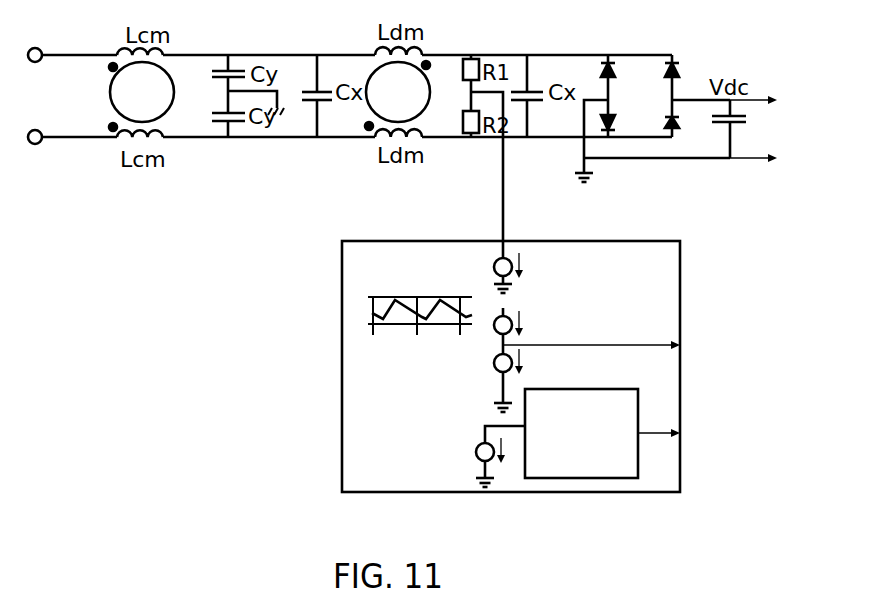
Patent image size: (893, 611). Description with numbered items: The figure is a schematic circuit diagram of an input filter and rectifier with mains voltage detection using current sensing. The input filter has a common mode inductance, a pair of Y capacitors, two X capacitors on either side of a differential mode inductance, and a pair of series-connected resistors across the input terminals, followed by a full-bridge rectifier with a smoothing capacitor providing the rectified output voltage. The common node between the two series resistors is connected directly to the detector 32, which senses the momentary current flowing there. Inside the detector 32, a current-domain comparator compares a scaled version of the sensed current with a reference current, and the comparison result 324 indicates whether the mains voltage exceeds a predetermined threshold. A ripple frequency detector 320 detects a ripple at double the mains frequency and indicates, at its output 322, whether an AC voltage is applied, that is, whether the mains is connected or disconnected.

The detector 32 is at (383, 273).
The ripple frequency detector 320 is at (610, 447).
The ripple detector output 322 is at (688, 433).
The comparison result 324 is at (620, 341).